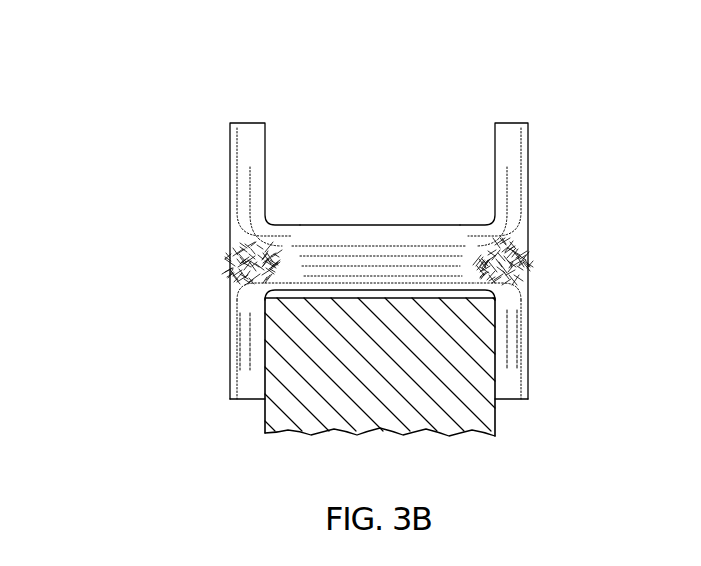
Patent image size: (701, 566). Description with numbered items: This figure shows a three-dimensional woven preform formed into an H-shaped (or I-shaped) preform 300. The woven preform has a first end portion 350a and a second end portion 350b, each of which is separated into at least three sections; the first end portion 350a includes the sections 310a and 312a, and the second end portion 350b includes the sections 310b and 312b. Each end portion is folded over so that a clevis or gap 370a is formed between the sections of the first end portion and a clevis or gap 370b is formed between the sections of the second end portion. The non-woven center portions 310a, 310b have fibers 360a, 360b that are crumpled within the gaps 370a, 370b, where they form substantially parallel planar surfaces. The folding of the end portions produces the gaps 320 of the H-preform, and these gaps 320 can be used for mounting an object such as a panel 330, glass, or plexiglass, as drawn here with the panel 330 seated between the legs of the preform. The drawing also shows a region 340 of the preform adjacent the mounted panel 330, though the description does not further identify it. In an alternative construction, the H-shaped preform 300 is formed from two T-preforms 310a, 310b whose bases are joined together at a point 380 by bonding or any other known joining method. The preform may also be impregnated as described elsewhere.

The H-shaped preform 300 is at (166, 128).
The first center section 310a is at (246, 224).
The second center section 310b is at (526, 232).
The first end portion section 312a is at (229, 377).
The second end portion section 312b is at (530, 391).
The gaps 320 is at (443, 108).
The panel 330 is at (458, 410).
The lower portion 340 is at (228, 340).
The first end portion 350a is at (287, 262).
The second end portion 350b is at (468, 263).
The fibers 360a is at (234, 260).
The fibers 360b is at (530, 260).
The first clevis or gap 370a is at (232, 268).
The second clevis or gap 370b is at (528, 273).
The joining point 380 is at (378, 298).